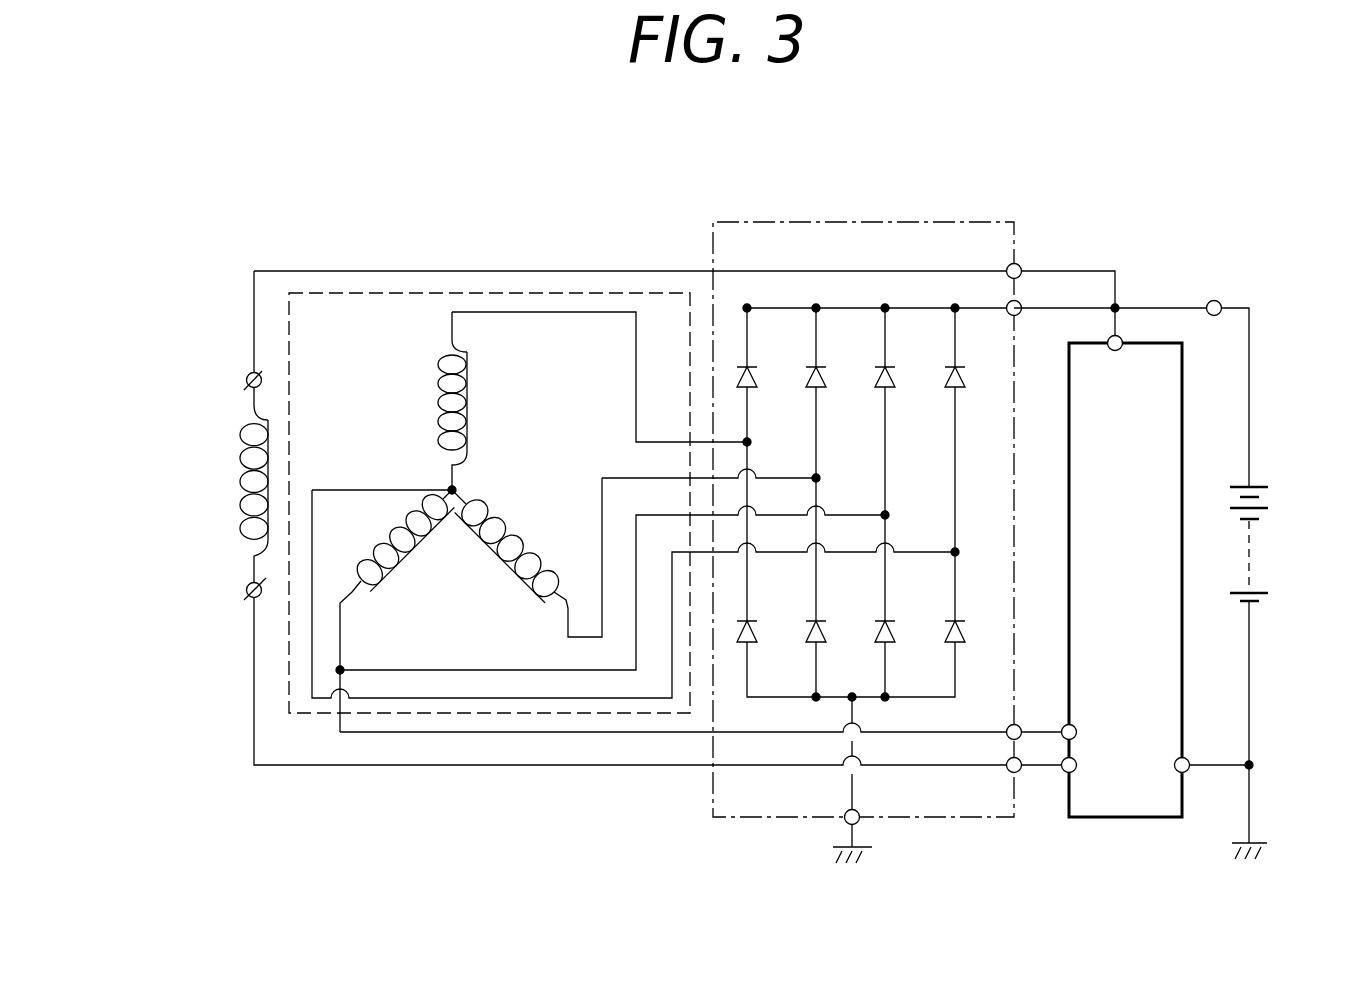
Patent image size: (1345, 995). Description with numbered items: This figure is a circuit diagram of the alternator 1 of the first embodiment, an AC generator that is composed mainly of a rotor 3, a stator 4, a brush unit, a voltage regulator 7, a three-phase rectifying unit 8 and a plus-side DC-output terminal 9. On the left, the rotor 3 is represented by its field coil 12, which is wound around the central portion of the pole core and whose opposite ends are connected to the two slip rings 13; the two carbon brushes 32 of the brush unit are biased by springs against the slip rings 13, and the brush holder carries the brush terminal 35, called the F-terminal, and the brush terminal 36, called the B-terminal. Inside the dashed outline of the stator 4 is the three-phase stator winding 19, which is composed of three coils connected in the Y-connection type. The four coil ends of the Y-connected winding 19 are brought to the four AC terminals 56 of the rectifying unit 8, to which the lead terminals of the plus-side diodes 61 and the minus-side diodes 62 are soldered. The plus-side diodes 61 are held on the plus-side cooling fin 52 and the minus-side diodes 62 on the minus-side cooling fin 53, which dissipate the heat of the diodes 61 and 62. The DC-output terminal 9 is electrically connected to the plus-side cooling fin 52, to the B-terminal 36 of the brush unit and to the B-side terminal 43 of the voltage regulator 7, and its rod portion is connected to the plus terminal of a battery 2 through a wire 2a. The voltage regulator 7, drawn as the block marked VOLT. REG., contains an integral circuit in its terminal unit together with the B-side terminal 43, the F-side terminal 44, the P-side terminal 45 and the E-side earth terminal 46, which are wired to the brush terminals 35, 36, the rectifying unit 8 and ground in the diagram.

The alternator 1 is at (312, 188).
The battery 2 is at (1262, 487).
The wire 2a is at (1252, 342).
The rotor 3 is at (228, 520).
The stator 4 is at (483, 292).
The voltage regulator 7 is at (1160, 350).
The three-phase rectifying unit 8 is at (893, 222).
The plus-side DC-output terminal 9 is at (1214, 300).
The field coil 12 is at (242, 438).
The slip rings 13 is at (248, 384).
The three-phase stator winding 19 is at (468, 414).
The carbon brushes 32 is at (250, 376).
The brush terminal (F-terminal) 35 is at (1010, 771).
The brush terminal (B-terminal) 36 is at (1016, 263).
The B-side terminal 43 is at (1119, 335).
The F-side terminal 44 is at (1066, 772).
The P-side terminal 45 is at (1064, 726).
The E-side terminal (earth terminal) 46 is at (1188, 760).
The plus-side cooling fin 52 is at (1020, 304).
The minus-side cooling fin 53 is at (845, 822).
The AC terminals 56 is at (816, 451).
The plus-side diodes 61 is at (810, 380).
The minus-side diodes 62 is at (808, 626).